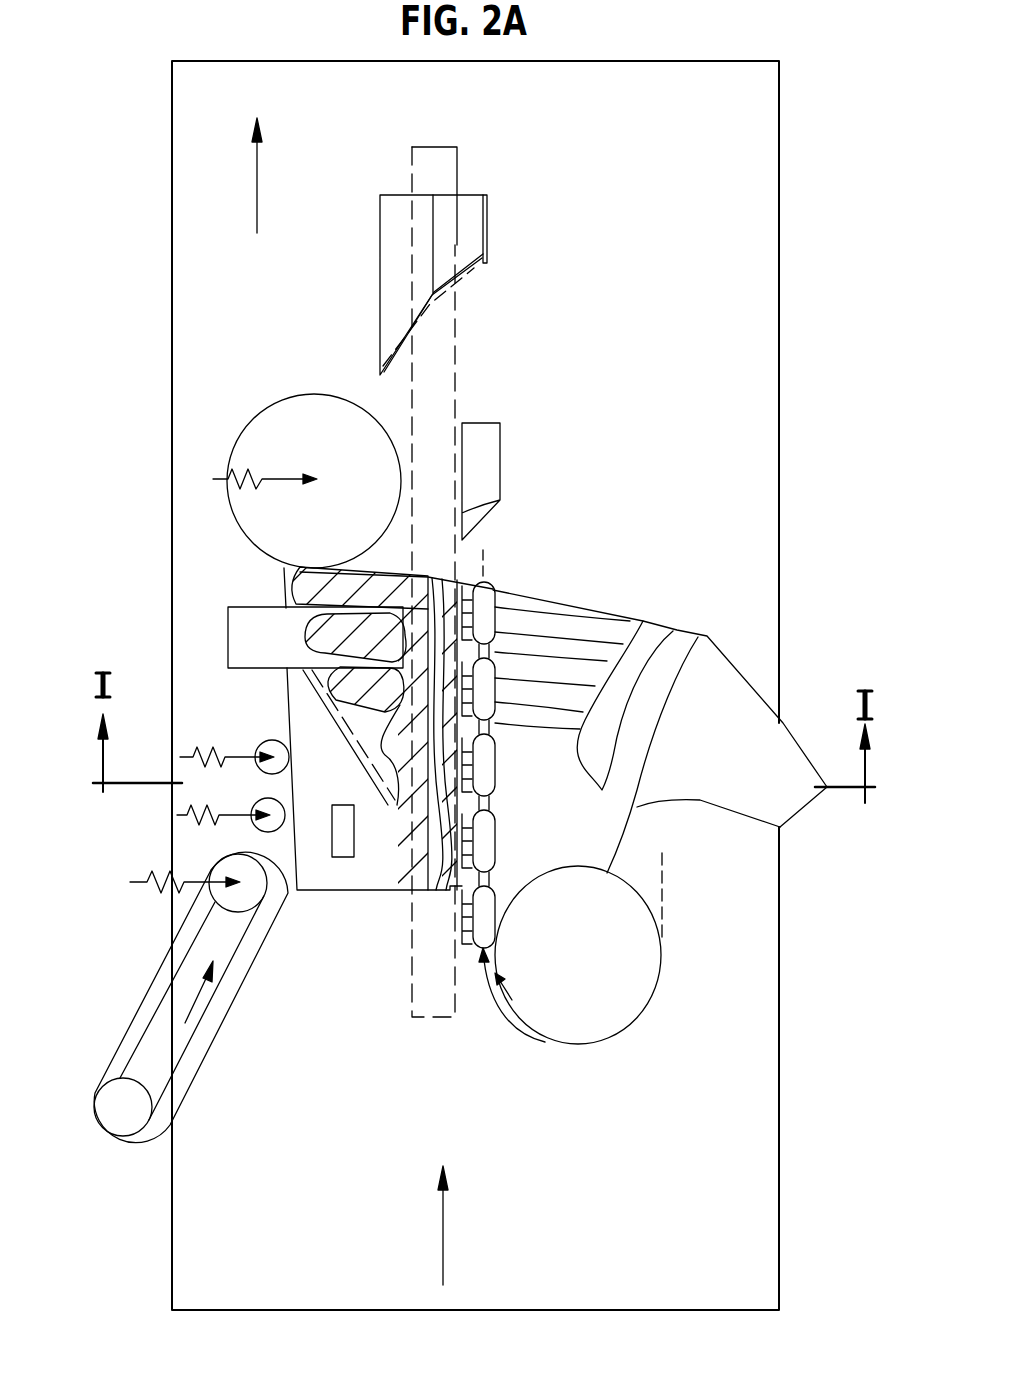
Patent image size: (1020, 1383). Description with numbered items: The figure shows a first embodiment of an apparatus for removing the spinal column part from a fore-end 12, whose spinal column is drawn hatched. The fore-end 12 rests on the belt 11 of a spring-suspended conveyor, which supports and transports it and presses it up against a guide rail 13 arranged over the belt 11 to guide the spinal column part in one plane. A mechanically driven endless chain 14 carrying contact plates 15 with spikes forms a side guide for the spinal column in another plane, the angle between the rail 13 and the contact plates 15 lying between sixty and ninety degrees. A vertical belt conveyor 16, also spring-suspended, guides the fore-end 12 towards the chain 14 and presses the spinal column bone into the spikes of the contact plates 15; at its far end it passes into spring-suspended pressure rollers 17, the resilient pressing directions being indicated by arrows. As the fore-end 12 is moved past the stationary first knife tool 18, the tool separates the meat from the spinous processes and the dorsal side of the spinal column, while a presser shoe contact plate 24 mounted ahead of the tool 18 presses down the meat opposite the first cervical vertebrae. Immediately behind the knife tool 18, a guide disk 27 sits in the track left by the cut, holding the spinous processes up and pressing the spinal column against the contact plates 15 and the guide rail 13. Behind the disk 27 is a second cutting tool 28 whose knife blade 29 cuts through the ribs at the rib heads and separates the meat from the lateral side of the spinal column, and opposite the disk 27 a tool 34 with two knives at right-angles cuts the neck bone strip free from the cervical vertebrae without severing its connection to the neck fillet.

The belt 11 is at (765, 1140).
The fore-end 12 is at (779, 745).
The guide rail 13 is at (420, 158).
The endless chain 14 is at (503, 587).
The contact plates 15 is at (465, 950).
The vertical belt conveyor 16 is at (101, 1096).
The pressure rollers 17 is at (272, 740).
The first knife tool 18 is at (240, 622).
The contact plate 24 is at (343, 852).
The guide disk 27 is at (260, 433).
The second cutting tool 28 is at (488, 223).
The knife blade 29 is at (383, 305).
The tool 34 is at (500, 453).